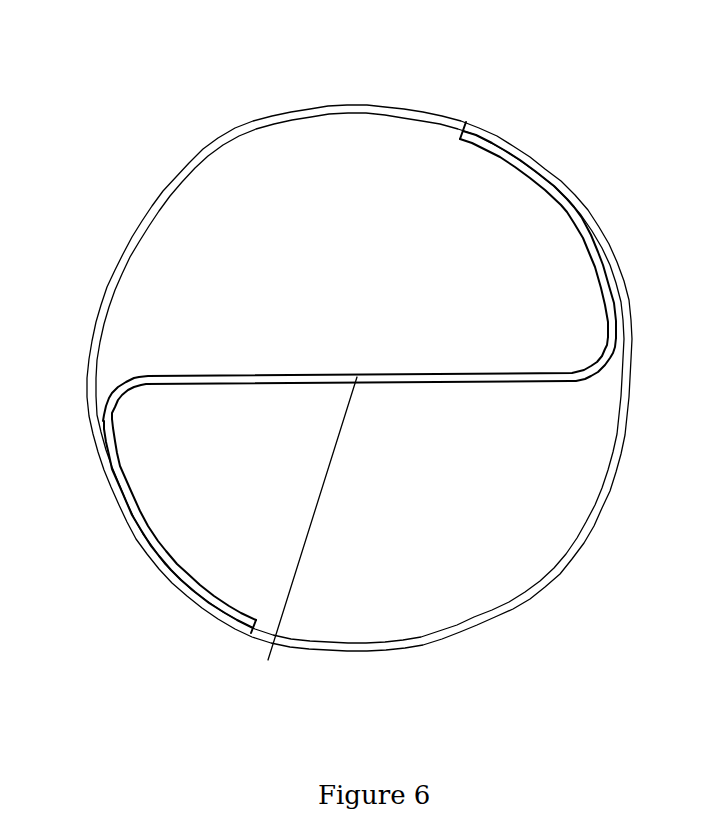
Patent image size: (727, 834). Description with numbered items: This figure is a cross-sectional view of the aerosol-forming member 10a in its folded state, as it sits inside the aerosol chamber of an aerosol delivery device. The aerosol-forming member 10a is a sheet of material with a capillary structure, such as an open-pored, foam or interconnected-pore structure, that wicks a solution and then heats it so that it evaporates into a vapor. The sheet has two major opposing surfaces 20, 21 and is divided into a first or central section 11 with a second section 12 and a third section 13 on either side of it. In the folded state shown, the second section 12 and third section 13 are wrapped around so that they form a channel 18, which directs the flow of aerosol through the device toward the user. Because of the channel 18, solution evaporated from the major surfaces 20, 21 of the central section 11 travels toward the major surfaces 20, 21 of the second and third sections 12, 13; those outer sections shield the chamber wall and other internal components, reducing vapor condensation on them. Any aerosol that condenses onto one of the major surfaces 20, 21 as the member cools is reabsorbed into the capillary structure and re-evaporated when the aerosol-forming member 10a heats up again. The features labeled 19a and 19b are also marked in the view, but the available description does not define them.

The aerosol-forming member 10a is at (445, 78).
The first or central section 11 is at (303, 538).
The second section 12 is at (380, 645).
The third section 13 is at (181, 174).
The channel 18 is at (493, 190).
The upper insert section 19a is at (575, 218).
The lower insert section 19b is at (135, 525).
The major opposing surface 20 is at (466, 385).
The major opposing surface 21 is at (405, 371).